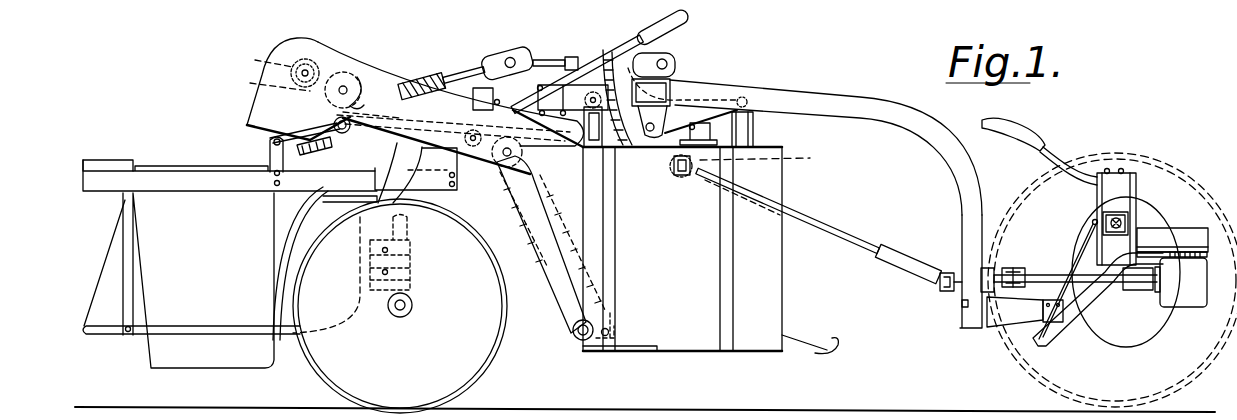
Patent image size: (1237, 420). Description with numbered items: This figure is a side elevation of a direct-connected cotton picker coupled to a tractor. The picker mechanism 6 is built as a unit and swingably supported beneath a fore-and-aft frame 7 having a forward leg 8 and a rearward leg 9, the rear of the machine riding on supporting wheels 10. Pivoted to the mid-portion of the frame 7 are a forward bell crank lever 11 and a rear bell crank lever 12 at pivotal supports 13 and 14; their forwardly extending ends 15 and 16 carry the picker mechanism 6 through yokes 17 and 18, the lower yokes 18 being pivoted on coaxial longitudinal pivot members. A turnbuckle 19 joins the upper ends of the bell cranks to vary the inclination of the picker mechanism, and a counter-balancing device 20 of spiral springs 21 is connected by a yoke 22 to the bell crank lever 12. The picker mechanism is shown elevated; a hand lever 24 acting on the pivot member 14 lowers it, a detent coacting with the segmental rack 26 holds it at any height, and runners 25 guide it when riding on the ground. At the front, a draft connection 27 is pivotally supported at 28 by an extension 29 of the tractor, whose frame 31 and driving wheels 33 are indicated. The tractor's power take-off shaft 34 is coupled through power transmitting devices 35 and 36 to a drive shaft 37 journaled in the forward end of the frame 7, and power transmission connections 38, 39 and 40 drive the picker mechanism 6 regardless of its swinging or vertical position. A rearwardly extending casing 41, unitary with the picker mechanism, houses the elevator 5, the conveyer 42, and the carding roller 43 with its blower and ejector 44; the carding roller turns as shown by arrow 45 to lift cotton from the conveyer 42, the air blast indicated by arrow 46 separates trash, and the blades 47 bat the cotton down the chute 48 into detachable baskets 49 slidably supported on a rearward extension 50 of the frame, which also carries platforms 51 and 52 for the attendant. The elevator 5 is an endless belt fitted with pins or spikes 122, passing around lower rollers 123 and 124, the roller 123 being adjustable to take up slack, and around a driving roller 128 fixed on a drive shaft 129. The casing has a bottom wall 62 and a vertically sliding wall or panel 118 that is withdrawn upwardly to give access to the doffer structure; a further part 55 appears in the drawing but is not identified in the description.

The elevators 5 is at (541, 281).
The picker mechanism 6 is at (777, 263).
The frame 7 is at (842, 97).
The forward leg 8 is at (960, 226).
The rearward leg 9 is at (310, 184).
The supporting wheels 10 is at (490, 360).
The forward bell crank lever 11 is at (672, 88).
The rear bell crank lever 12 is at (451, 108).
The pivotal support 13 is at (626, 148).
The pivotal support 14 is at (453, 133).
The forwardly extending end 15 is at (680, 178).
The forwardly extending end 16 is at (598, 115).
The yoke 17 is at (753, 100).
The lower yokes 18 is at (755, 135).
The turnbuckle 19 is at (550, 57).
The counter-balancing device 20 is at (460, 76).
The spiral springs 21 is at (413, 76).
The yoke 22 is at (512, 55).
The hand lever 24 is at (678, 66).
The runners 25 is at (266, 147).
The segmental rack 26 is at (603, 52).
The draft connection 27 is at (1003, 322).
The pivotal support 28 is at (1066, 340).
The extension 29 is at (1095, 300).
The frame 31 is at (1167, 240).
The driving wheels 33 is at (1002, 360).
The power take-off shaft 34 is at (1143, 290).
The power transmitting device 35 is at (1017, 268).
The power transmitting device 36 is at (1080, 283).
The drive shaft 37 is at (984, 270).
The power transmission connection 38 is at (770, 162).
The power transmission connection 39 is at (887, 253).
The power transmission connection 40 is at (940, 287).
The casing 41 is at (356, 104).
The conveyer 42 is at (380, 140).
The carding roller 43 is at (305, 94).
The blower and ejector 44 is at (308, 60).
The arrow 45 is at (356, 85).
The arrow 46 is at (343, 70).
The blades 47 is at (258, 57).
The chute 48 is at (257, 112).
The baskets or receptacles 49 is at (198, 280).
The rearward extension 50 is at (115, 186).
The platform 51 is at (110, 160).
The platform 52 is at (108, 332).
The gearbox 55 is at (363, 233).
The bottom wall 62 is at (695, 353).
The vertically sliding wall or panel 118 is at (703, 297).
The pins or spikes 122 is at (560, 310).
The lower roller 123 is at (572, 331).
The lower roller 124 is at (578, 352).
The driving roller or pulley 128 is at (537, 260).
The drive shaft 129 is at (497, 197).